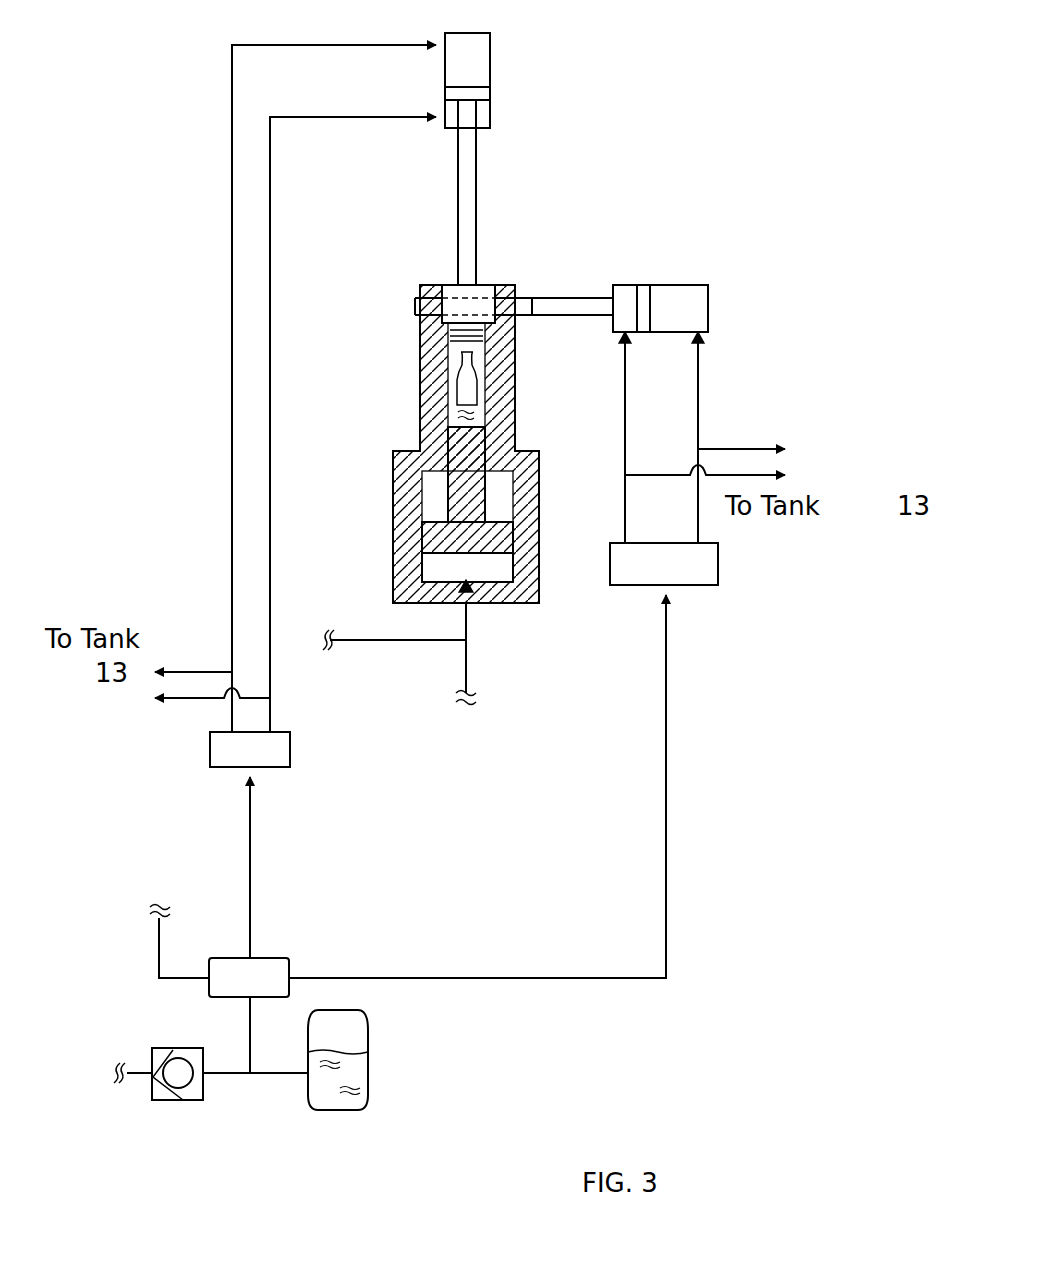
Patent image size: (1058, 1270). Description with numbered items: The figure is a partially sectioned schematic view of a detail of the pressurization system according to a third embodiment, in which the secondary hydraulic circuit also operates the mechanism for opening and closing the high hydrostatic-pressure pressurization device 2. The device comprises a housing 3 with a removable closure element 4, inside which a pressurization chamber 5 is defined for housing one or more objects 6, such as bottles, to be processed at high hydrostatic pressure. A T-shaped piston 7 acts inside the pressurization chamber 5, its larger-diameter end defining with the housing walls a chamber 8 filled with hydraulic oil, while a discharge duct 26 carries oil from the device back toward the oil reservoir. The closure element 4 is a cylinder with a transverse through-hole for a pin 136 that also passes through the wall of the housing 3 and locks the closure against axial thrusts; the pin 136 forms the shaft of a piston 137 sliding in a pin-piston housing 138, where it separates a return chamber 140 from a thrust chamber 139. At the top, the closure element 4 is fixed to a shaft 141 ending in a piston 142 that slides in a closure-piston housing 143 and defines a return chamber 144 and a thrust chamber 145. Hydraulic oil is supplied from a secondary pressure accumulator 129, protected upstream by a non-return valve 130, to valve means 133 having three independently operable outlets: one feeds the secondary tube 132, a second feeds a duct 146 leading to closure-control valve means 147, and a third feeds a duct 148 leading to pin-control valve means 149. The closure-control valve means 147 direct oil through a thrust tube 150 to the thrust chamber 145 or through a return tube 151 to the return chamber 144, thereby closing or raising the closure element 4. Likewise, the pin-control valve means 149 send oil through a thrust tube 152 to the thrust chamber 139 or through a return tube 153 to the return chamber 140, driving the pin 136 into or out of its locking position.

The high hydrostatic-pressure pressurization device 2 is at (405, 347).
The housing 3 is at (505, 360).
The removable closure element 4 is at (483, 288).
The pressurization chamber 5 is at (483, 407).
The objects 6 is at (455, 383).
The piston 7 is at (513, 540).
The chamber 8 is at (467, 568).
The discharge duct 26 is at (466, 662).
The secondary pressure accumulator 129 is at (368, 1060).
The non-return valve 130 is at (183, 1100).
The secondary tube 132 is at (159, 945).
The valve means 133 is at (272, 957).
The pin 136 is at (560, 298).
The piston 137 is at (645, 285).
The housing of the pin piston 138 is at (700, 285).
The thrust chamber 139 is at (700, 302).
The return chamber 140 is at (618, 285).
The shaft 141 is at (458, 212).
The piston 142 is at (490, 96).
The housing of the closure piston 143 is at (490, 58).
The return chamber 144 is at (490, 113).
The thrust chamber 145 is at (445, 65).
The duct 146 is at (250, 852).
The closure-control valve means 147 is at (290, 755).
The duct 148 is at (666, 730).
The pin-control valve means 149 is at (718, 560).
The thrust tube 150 is at (232, 395).
The return tube 151 is at (270, 488).
The thrust tube 152 is at (698, 368).
The return tube 153 is at (625, 410).